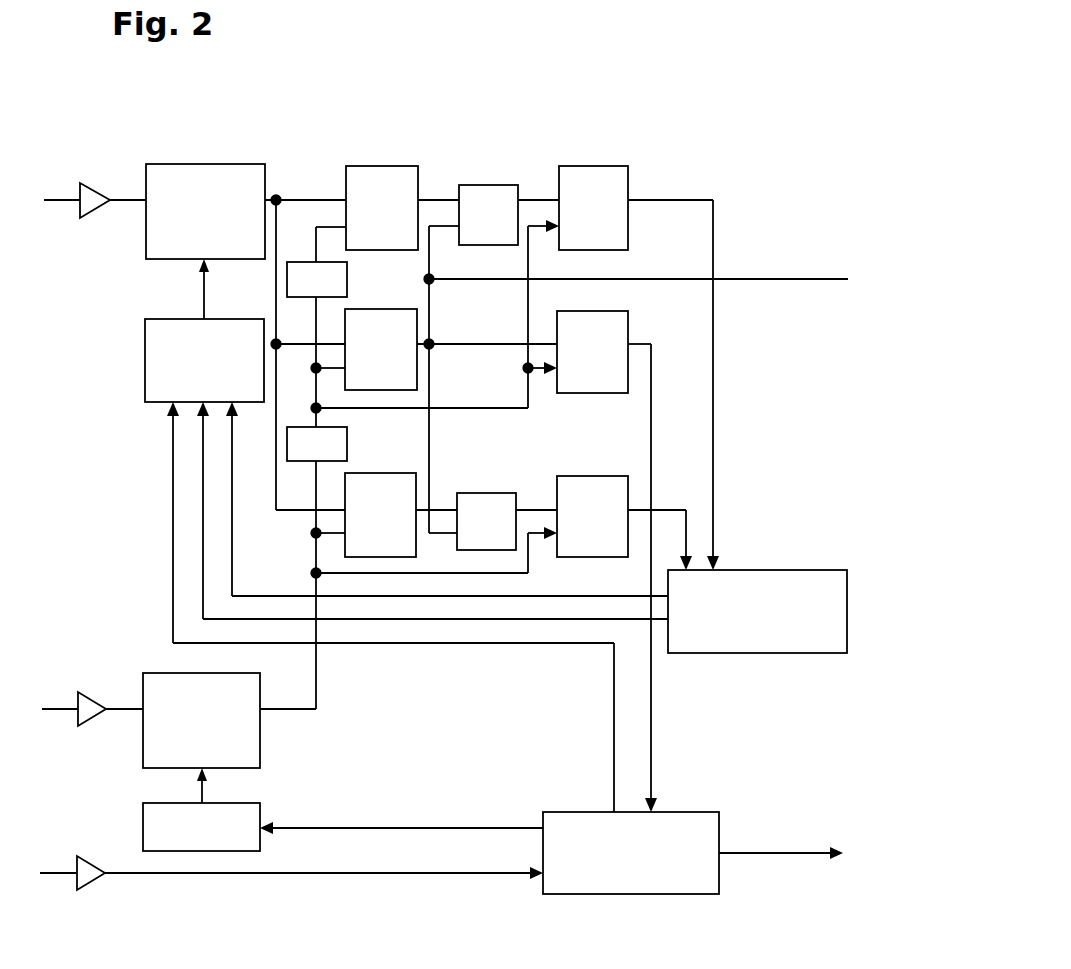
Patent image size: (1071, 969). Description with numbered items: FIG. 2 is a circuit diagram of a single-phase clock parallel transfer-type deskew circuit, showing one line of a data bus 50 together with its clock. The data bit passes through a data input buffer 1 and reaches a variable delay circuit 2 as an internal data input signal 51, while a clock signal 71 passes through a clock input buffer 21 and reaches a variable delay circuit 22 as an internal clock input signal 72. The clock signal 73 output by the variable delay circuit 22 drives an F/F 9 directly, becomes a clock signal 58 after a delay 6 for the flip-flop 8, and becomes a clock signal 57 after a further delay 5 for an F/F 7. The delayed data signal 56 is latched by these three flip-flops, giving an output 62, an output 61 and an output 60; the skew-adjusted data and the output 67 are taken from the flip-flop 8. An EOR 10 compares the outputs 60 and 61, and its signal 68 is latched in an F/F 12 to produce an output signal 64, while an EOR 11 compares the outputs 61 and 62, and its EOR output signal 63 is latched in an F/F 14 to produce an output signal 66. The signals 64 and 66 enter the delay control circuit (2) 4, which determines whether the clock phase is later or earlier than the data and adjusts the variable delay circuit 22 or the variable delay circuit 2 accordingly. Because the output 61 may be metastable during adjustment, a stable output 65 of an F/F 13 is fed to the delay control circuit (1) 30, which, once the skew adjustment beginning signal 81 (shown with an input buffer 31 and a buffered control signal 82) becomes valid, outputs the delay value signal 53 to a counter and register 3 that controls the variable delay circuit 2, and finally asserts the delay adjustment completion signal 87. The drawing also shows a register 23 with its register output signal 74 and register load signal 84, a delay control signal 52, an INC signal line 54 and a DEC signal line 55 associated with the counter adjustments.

The data input buffer 1 is at (95, 205).
The variable delay circuit 2 is at (222, 172).
The counter and register 3 is at (225, 318).
The delay control circuit (2) 4 is at (812, 570).
The delay 5 is at (348, 285).
The delay 6 is at (348, 452).
The F/F 7 is at (382, 166).
The flip-flop 8 is at (385, 304).
The F/F 9 is at (383, 478).
The EOR 10 is at (470, 185).
The EOR 11 is at (470, 493).
The F/F 12 is at (590, 168).
The F/F 13 is at (590, 308).
The F/F 14 is at (590, 475).
The clock input buffer 21 is at (93, 713).
The variable delay circuit 22 is at (225, 673).
The register 23 is at (222, 802).
The delay control circuit (1) 30 is at (685, 812).
The input buffer 31 is at (92, 878).
The data bus 50 is at (54, 194).
The internal data input signal 51 is at (122, 194).
The delay control signal 52 is at (202, 288).
The delay value signal 53 is at (488, 644).
The INC signal line 54 is at (432, 620).
The DEC signal line 55 is at (380, 597).
The data signal 56 is at (290, 195).
The clock signal 57 is at (322, 221).
The clock signal 58 is at (460, 406).
The output 60 is at (440, 195).
The output 61 is at (458, 340).
The output 62 is at (441, 505).
The EOR output signal 63 is at (530, 505).
The output signal 64 is at (679, 197).
The output 65 is at (645, 345).
The output signal 66 is at (671, 507).
The output 67 is at (790, 283).
The signal 68 is at (534, 197).
The clock signal 71 is at (54, 702).
The internal clock input signal 72 is at (122, 702).
The clock signal 73 is at (288, 711).
The register output signal 74 is at (200, 788).
The skew adjustment beginning signal 81 is at (54, 868).
The buffered control signal 82 is at (385, 873).
The register load signal 84 is at (385, 828).
The delay adjustment completion signal 87 is at (760, 853).